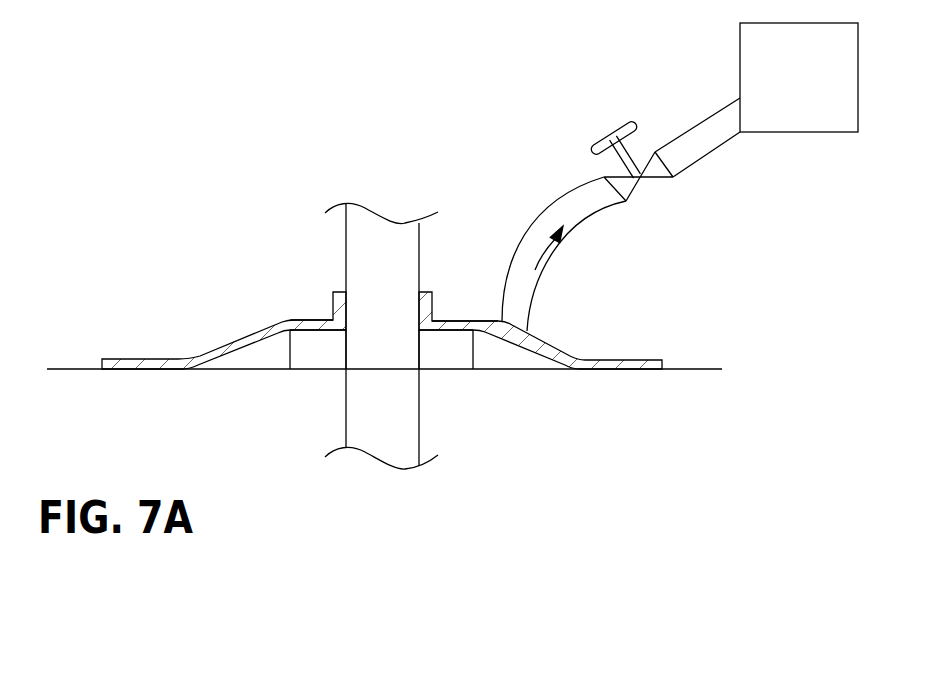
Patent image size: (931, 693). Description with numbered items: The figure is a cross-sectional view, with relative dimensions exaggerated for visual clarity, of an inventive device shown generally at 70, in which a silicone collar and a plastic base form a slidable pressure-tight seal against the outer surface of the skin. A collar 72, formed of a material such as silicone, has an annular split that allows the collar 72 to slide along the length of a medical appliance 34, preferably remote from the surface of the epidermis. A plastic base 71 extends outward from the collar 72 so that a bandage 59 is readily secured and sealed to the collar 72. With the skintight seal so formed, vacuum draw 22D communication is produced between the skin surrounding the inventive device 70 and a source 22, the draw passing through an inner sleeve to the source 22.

The inventive device 70 is at (512, 90).
The source 22 is at (808, 92).
The vacuum draw 22D is at (542, 258).
The medical appliance 34 is at (392, 240).
The bandage 59 is at (215, 343).
The plastic base 71 is at (298, 317).
The collar 72 is at (448, 355).